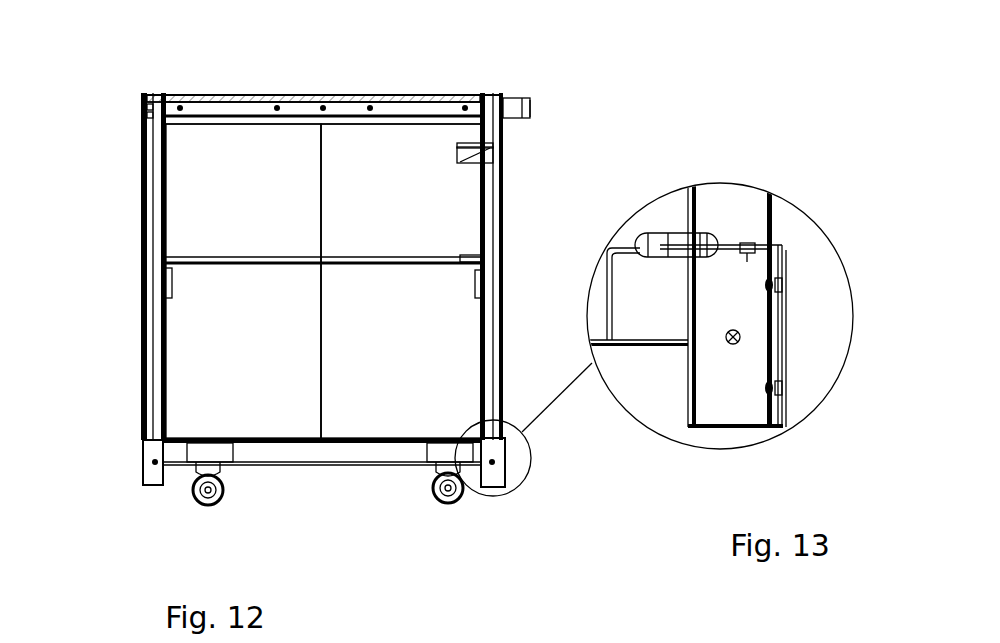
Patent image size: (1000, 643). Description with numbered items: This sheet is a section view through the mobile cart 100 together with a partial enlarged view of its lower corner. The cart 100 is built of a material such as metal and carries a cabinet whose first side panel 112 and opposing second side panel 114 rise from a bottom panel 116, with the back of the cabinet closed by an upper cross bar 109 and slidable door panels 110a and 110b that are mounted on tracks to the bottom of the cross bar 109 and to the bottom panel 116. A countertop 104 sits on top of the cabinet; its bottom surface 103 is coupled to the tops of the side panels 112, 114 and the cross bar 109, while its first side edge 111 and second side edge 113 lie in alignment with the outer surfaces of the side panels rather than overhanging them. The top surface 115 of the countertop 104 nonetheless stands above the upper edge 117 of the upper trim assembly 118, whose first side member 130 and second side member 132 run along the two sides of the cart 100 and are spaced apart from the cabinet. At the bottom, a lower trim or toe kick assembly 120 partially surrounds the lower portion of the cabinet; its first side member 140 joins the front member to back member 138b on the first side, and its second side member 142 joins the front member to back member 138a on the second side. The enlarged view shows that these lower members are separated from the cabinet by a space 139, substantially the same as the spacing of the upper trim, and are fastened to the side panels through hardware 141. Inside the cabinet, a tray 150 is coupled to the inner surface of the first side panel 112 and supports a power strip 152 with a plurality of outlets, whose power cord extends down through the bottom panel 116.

In FIG. 12, the mobile cart 100 is at (668, 104).
In FIG. 12, the bottom surface 103 is at (215, 100).
In FIG. 12, the countertop 104 is at (360, 80).
In FIG. 12, the upper cross bar 109 is at (320, 100).
In FIG. 12, the back panel 110a is at (200, 190).
In FIG. 12, the back panel 110b is at (420, 250).
In FIG. 12, the first side edge 111 is at (505, 96).
In FIG. 12, the first side panel 112 is at (500, 355).
In FIG. 12, the second side edge 113 is at (143, 93).
In FIG. 12, the second side panel 114 is at (148, 368).
In FIG. 12, the top surface 115 is at (240, 93).
In FIG. 12, the bottom panel 116 is at (332, 438).
In FIG. 13, the bottom panel 116 is at (623, 243).
In FIG. 12, the upper edge 117 is at (525, 98).
In FIG. 12, the upper trim assembly 118 is at (122, 124).
In FIG. 12, the lower trim assembly 120 is at (525, 449).
In FIG. 13, the lower trim assembly 120 is at (805, 240).
In FIG. 12, the first side member 130 is at (531, 112).
In FIG. 12, the second side member 132 is at (143, 107).
In FIG. 12, the back member 138a is at (155, 482).
In FIG. 12, the back member 138b is at (490, 482).
In FIG. 13, the back member 138b is at (720, 395).
In FIG. 13, the space 139 is at (710, 317).
In FIG. 12, the first side member 140 is at (505, 465).
In FIG. 13, the first side member 140 is at (783, 363).
In FIG. 13, the hardware 141 is at (810, 276).
In FIG. 12, the second side member 142 is at (145, 470).
In FIG. 12, the tray 150 is at (470, 163).
In FIG. 12, the power strip 152 is at (462, 150).